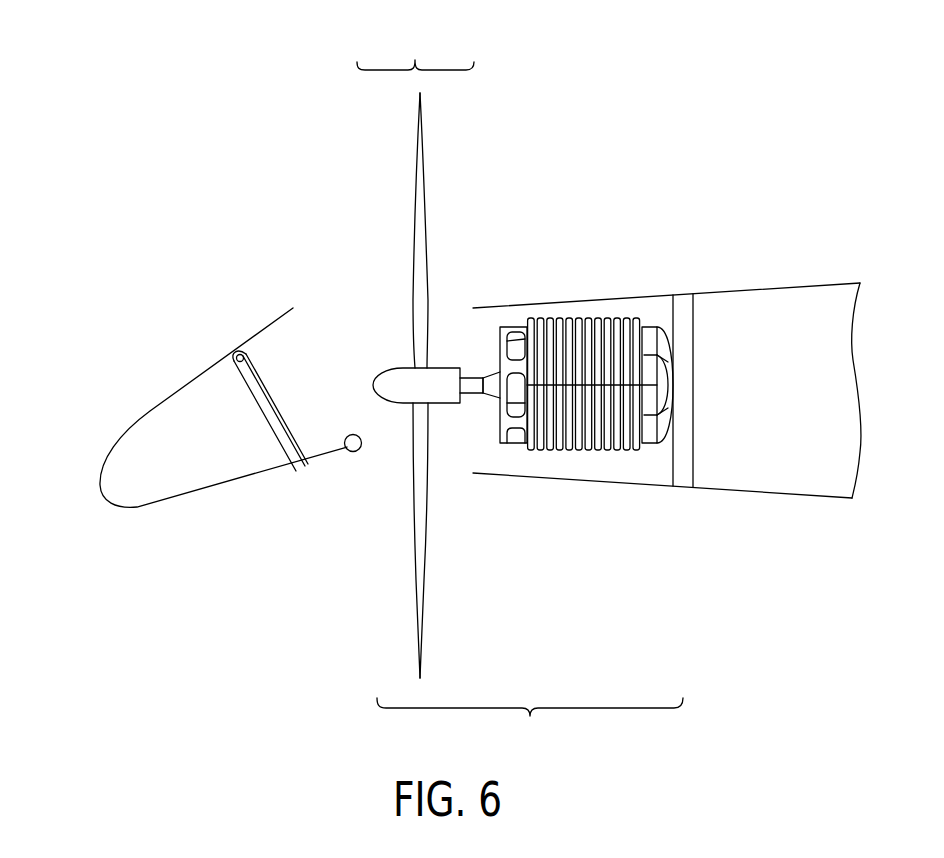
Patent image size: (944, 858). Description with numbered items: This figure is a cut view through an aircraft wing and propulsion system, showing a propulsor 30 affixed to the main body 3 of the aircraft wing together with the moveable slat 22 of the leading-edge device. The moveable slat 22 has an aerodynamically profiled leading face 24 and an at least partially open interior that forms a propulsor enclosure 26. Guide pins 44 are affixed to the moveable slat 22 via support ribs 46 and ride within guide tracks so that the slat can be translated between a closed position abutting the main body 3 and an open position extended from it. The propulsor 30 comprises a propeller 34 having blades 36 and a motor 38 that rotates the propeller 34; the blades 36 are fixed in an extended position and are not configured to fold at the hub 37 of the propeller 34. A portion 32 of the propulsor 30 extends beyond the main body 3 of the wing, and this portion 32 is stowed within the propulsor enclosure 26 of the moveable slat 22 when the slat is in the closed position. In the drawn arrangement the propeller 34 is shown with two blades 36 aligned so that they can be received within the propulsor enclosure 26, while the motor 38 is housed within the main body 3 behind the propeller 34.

The main body 3 is at (837, 282).
The moveable slat 22 is at (153, 402).
The aerodynamically profiled leading face 24 is at (102, 502).
The propulsor enclosure 26 is at (163, 470).
The propulsor 30 is at (530, 727).
The portion of propulsor 32 is at (415, 47).
The propeller 34 is at (390, 350).
The blades 36 is at (424, 207).
The hub 37 is at (433, 390).
The motor 38 is at (573, 430).
The guide pins 44 is at (238, 350).
The support ribs 46 is at (213, 463).